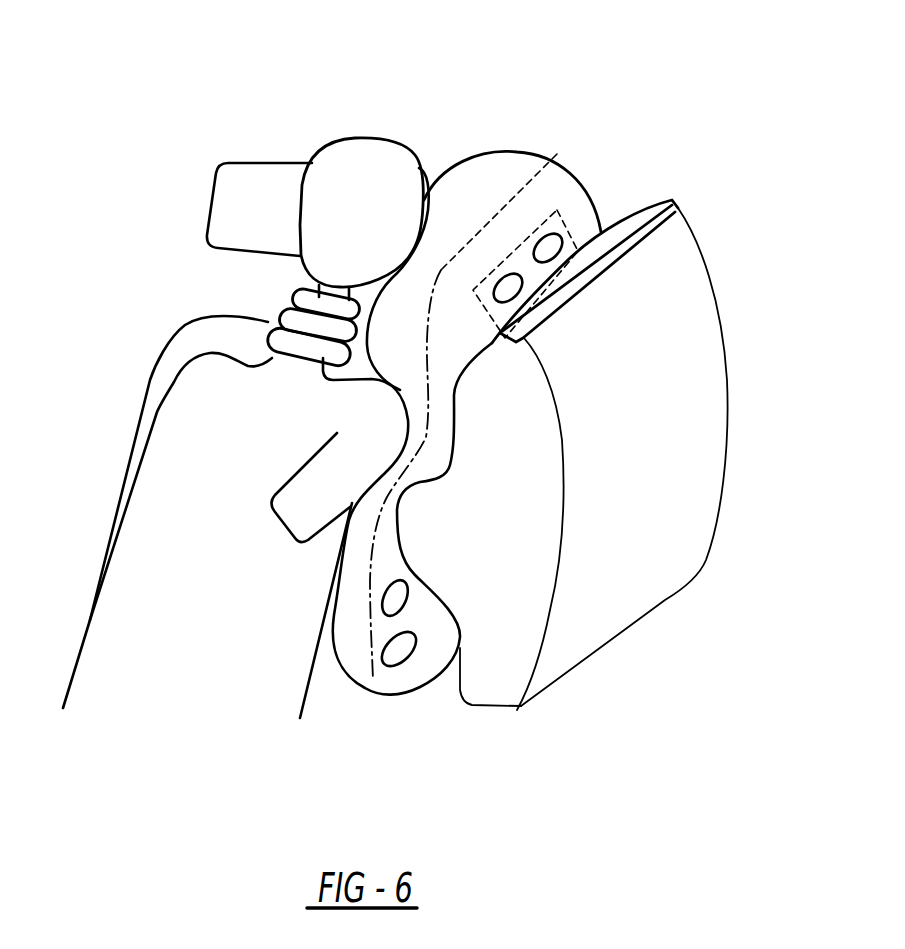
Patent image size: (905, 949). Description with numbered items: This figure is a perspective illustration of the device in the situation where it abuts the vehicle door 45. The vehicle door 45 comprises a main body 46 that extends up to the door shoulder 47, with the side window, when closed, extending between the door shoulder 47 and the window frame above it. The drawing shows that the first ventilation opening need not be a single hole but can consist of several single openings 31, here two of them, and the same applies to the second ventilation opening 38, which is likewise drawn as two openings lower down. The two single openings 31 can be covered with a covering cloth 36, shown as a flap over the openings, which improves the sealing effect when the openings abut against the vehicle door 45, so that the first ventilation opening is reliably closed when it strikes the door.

The single openings 31 is at (508, 287).
The covering cloth 36 is at (503, 318).
The second ventilation opening 38 is at (396, 597).
The vehicle door 45 is at (657, 449).
The main body 46 is at (510, 583).
The door shoulder 47 is at (632, 226).